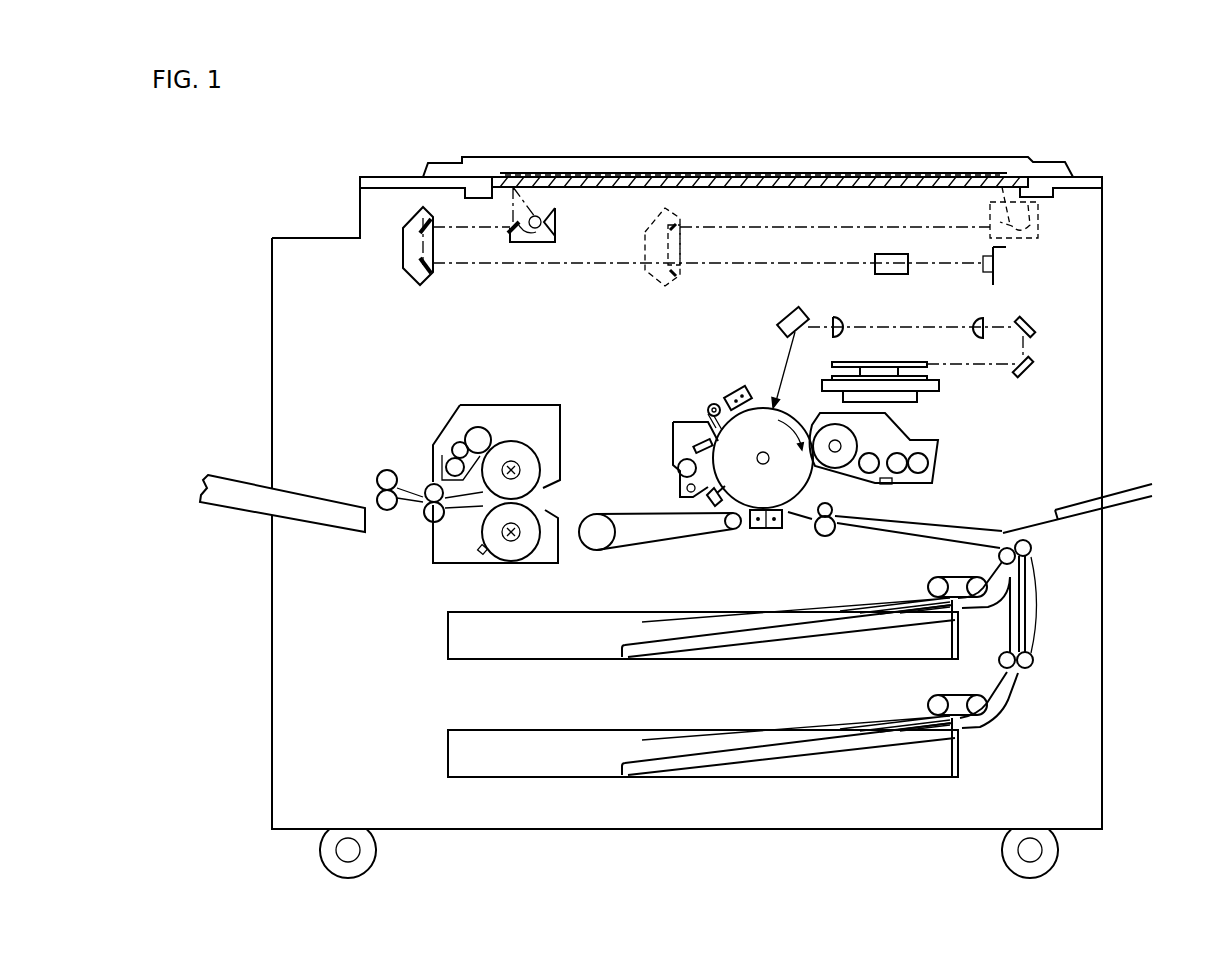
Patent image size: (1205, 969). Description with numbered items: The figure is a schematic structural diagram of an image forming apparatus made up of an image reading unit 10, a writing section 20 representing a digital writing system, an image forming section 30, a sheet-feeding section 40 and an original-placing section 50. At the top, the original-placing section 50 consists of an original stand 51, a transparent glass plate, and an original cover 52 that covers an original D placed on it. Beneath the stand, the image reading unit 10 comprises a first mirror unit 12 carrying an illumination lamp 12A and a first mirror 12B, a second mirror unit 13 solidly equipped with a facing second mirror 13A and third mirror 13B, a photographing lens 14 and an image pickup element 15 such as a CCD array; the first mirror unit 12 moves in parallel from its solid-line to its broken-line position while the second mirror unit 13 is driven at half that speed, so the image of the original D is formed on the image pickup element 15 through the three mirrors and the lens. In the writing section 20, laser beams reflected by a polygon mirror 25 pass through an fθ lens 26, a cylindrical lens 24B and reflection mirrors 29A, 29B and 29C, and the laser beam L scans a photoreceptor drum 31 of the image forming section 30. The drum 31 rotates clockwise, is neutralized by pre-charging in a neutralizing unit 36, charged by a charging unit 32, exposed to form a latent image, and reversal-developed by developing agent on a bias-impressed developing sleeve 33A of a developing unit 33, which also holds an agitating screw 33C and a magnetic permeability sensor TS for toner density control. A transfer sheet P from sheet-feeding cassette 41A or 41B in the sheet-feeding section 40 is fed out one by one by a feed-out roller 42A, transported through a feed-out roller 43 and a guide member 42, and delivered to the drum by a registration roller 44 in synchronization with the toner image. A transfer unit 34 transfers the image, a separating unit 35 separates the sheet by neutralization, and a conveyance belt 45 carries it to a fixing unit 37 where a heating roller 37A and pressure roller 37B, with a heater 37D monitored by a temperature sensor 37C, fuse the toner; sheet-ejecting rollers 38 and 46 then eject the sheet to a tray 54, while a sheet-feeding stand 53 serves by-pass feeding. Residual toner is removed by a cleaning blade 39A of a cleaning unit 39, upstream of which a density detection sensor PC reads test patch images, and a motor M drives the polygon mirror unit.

The image reading unit 10 is at (627, 258).
The first mirror unit 12 is at (537, 234).
The illumination lamp 12A is at (548, 228).
The first mirror 12B is at (508, 235).
The second mirror unit 13 is at (380, 261).
The second mirror 13A is at (415, 218).
The third mirror 13B is at (430, 276).
The photographing lens 14 is at (890, 275).
The image pickup element 15 is at (983, 265).
The writing section 20 is at (865, 339).
The cylindrical lens 24B is at (838, 316).
The polygon mirror 25 is at (876, 362).
The fθ lens 26 is at (985, 325).
The reflection mirror 29A is at (1033, 369).
The reflection mirror 29B is at (1032, 318).
The reflection mirror 29C is at (792, 312).
The image forming section 30 is at (662, 437).
The photoreceptor drum 31 is at (771, 405).
The charging unit 32 is at (733, 390).
The developing unit 33 is at (930, 465).
The developing sleeve 33A is at (857, 438).
The agitating screw 33C is at (905, 446).
The transfer unit 34 is at (777, 530).
The separating unit 35 is at (756, 530).
The neutralizing unit 36 is at (708, 405).
The fixing unit 37 is at (490, 491).
The heating roller 37A is at (516, 441).
The pressure roller 37B is at (483, 522).
The temperature sensor 37C is at (478, 556).
The heater 37D is at (520, 468).
The sheet-ejecting roller 38 is at (430, 483).
The cleaning unit 39 is at (678, 468).
The cleaning blade 39A is at (672, 437).
The sheet-feeding section 40 is at (1042, 700).
The sheet-feeding cassette 41A is at (596, 611).
The sheet-feeding cassette 41B is at (561, 729).
The guide member 42 is at (1010, 632).
The feed-out roller 42A is at (928, 586).
The feed-out roller 43 is at (1038, 592).
The registration roller 44 is at (826, 537).
The conveyance belt 45 is at (605, 514).
The sheet-ejecting roller 46 is at (378, 471).
The original-placing section 50 is at (1045, 158).
The original stand 51 is at (727, 173).
The original cover 52 is at (840, 176).
The sheet-feeding stand 53 is at (1130, 486).
The tray 54 is at (238, 474).
The original D is at (605, 172).
The laser beam L is at (922, 326).
The motor M is at (917, 396).
The transfer sheet P is at (781, 624).
The density detection sensor PC is at (706, 497).
The magnetic permeability sensor TS is at (885, 485).